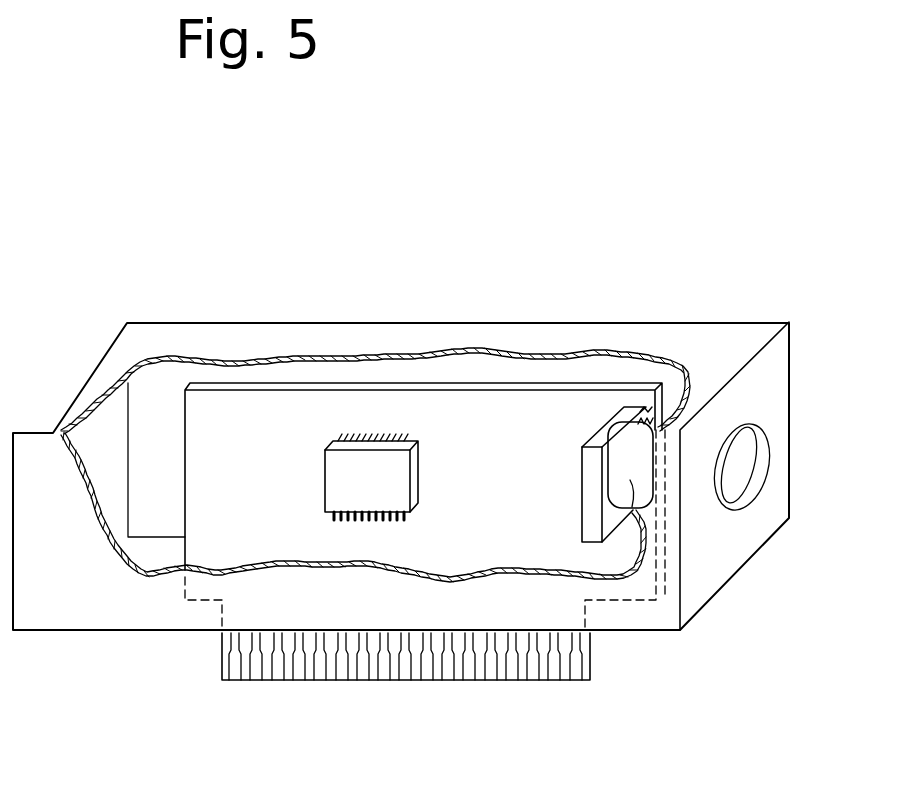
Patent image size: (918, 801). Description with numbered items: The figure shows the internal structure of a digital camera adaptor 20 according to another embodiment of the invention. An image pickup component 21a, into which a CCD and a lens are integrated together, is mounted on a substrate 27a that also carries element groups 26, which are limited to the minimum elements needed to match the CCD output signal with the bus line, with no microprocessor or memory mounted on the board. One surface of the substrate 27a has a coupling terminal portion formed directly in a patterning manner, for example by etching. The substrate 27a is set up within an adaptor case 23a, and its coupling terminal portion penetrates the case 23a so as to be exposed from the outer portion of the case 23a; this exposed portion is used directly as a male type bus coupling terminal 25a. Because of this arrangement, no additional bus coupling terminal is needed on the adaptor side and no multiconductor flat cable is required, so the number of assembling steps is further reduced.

The digital camera adaptor 20 is at (442, 328).
The image pickup component 21a is at (633, 510).
The adaptor case 23a is at (183, 338).
The male type bus coupling terminal 25a is at (227, 648).
The element groups 26 is at (355, 475).
The substrate 27a is at (208, 533).